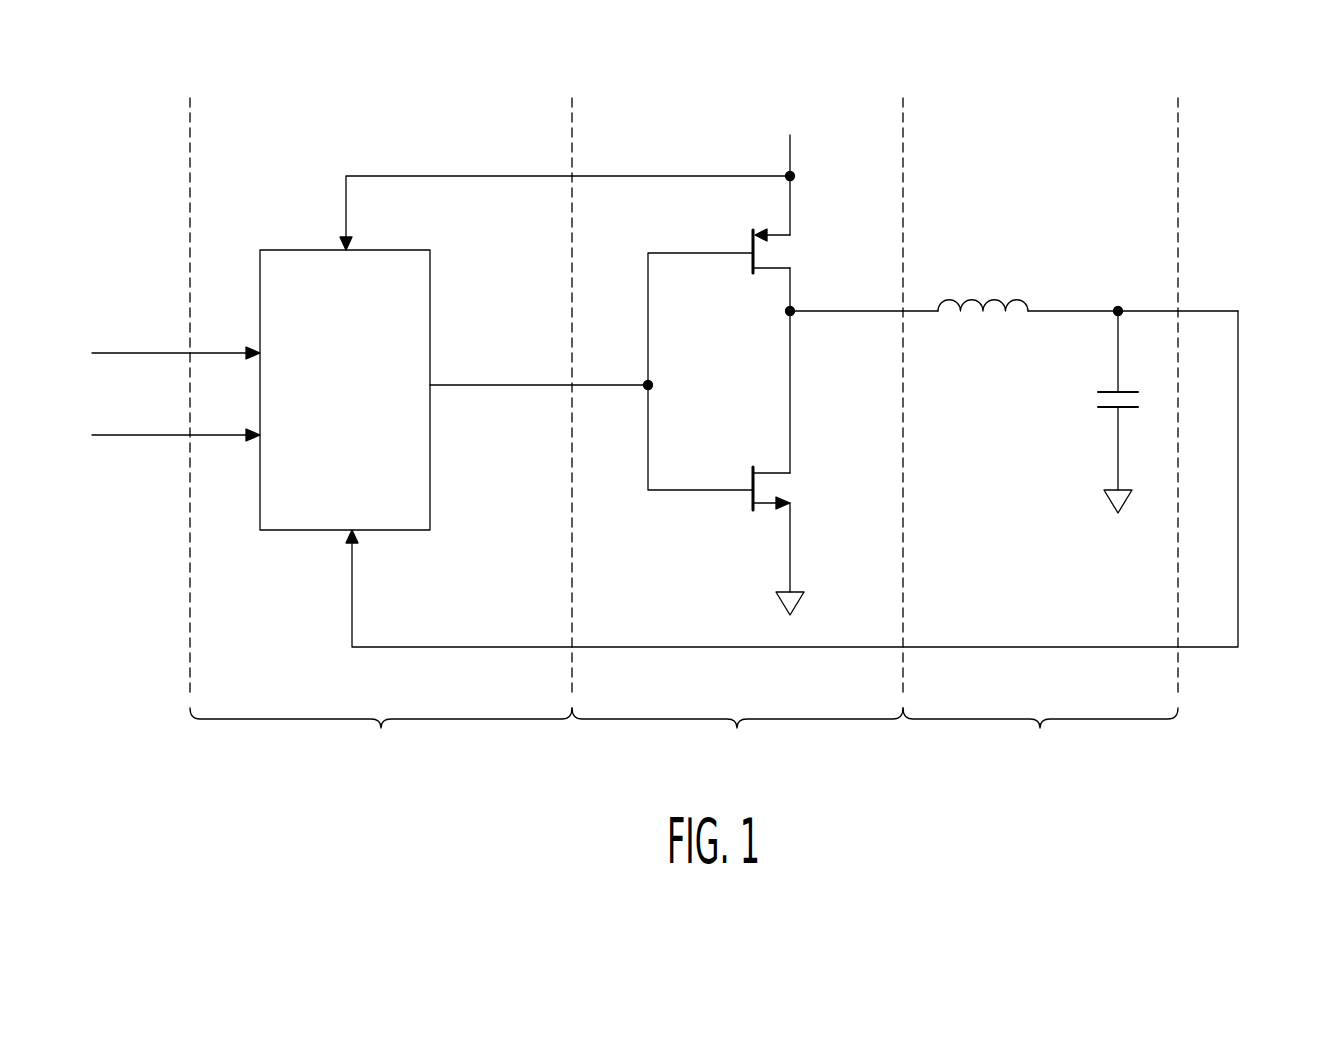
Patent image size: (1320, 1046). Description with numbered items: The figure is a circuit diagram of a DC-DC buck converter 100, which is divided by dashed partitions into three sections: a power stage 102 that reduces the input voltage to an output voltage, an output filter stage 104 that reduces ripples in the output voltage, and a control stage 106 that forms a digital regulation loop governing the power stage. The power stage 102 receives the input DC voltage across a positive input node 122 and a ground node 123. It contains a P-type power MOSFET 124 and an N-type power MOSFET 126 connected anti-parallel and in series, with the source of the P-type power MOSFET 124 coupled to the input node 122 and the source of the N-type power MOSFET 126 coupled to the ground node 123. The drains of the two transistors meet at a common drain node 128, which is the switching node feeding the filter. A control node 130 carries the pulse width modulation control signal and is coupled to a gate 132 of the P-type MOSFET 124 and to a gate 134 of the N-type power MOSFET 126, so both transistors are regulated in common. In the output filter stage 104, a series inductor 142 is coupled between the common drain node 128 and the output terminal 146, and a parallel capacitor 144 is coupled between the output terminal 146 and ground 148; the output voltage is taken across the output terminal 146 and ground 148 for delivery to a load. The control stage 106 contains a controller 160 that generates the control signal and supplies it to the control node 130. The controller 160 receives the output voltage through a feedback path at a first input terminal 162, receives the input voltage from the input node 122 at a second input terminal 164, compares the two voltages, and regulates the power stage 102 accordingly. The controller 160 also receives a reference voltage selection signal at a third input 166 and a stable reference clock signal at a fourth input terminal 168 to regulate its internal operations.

The DC-DC buck converter 100 is at (1258, 148).
The power stage 102 is at (737, 736).
The output filter stage 104 is at (1040, 736).
The control stage 106 is at (381, 736).
The input node 122 is at (788, 174).
The ground node 123 is at (789, 568).
The P-type power MOSFET 124 is at (813, 231).
The N-type power MOSFET 126 is at (813, 467).
The common drain node 128 is at (788, 313).
The control node 130 is at (651, 387).
The gate of the P-type MOSFET 132 is at (752, 260).
The gate of the N-type power MOSFET 134 is at (752, 503).
The series inductor 142 is at (1015, 298).
The parallel capacitor 144 is at (1108, 410).
The output terminal 146 is at (1116, 313).
The ground 148 is at (1108, 498).
The controller 160 is at (431, 293).
The first input terminal 162 is at (355, 531).
The second input terminal 164 is at (340, 248).
The third input 166 is at (258, 350).
The fourth input terminal 168 is at (258, 442).